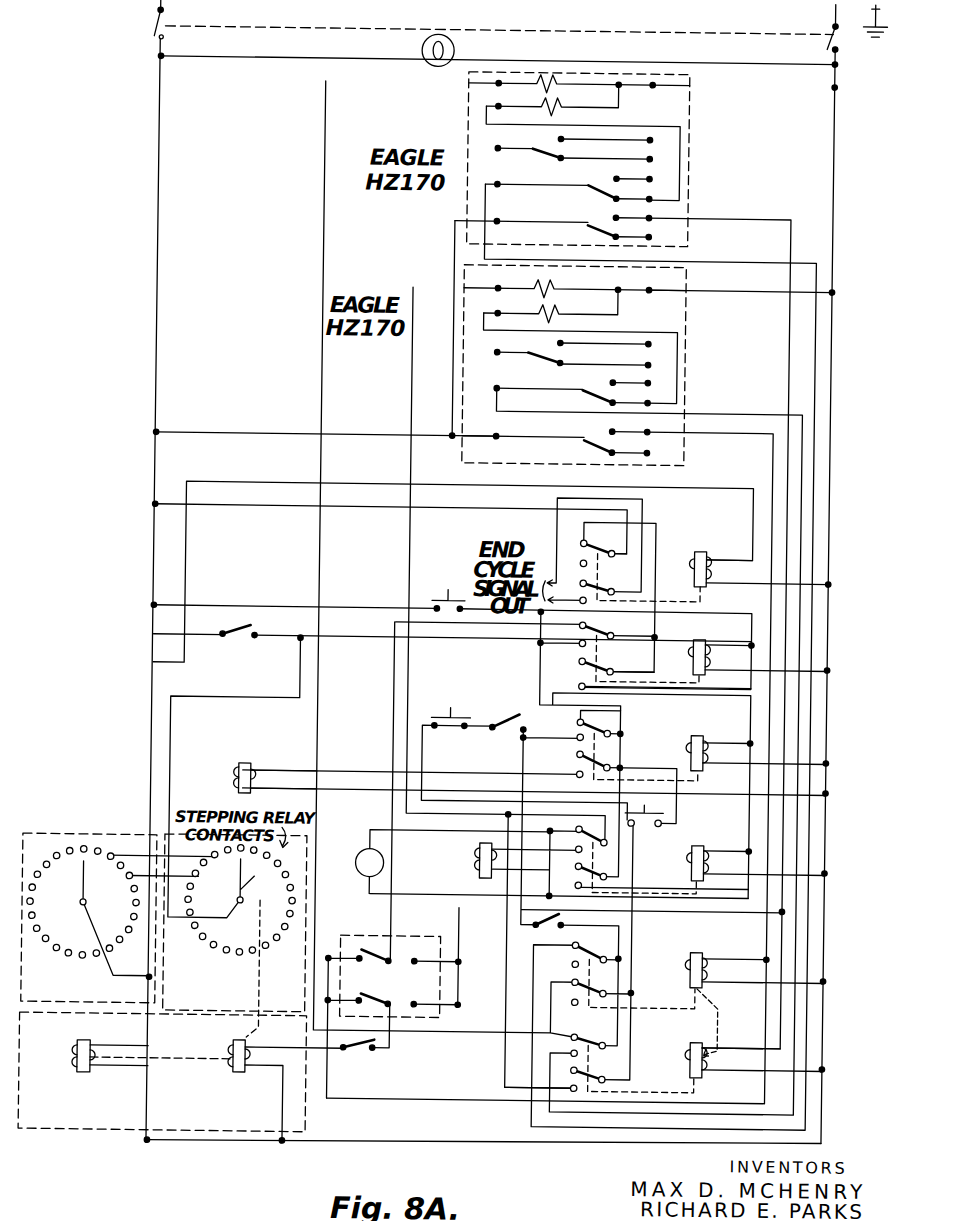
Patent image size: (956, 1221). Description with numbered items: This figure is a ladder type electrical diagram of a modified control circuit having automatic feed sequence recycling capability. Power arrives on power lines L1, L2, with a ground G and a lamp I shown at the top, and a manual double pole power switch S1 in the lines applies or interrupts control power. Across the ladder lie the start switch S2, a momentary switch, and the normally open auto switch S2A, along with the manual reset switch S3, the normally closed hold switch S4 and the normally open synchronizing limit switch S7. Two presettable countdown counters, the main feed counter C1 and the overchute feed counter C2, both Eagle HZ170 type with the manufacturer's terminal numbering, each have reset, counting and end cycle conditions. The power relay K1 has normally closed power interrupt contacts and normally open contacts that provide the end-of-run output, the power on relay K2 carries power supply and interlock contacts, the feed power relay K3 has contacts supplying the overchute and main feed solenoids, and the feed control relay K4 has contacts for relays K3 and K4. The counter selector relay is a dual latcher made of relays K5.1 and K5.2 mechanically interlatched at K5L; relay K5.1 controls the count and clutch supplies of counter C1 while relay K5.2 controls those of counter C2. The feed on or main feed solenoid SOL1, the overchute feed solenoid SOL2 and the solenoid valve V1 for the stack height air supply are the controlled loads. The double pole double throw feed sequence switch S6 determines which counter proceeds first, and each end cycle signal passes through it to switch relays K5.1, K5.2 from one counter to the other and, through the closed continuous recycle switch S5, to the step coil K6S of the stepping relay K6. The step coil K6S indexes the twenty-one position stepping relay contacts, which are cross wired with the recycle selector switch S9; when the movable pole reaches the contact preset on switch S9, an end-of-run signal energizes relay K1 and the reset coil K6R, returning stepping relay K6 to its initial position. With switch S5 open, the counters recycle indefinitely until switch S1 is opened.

The power line L1 is at (499, 19).
The power line L2 is at (804, 573).
The ground G is at (878, 21).
The indicator lamp I is at (415, 48).
The power switch S1 is at (100, 570).
The start switch S2 is at (419, 601).
The auto switch S2A is at (200, 668).
The reset switch S3 is at (666, 807).
The hold switch S4 is at (428, 746).
The continuous recycle switch S5 is at (358, 1068).
The feed sequence switch S6 is at (406, 1013).
The synchronizing switch S7 is at (517, 706).
The recycle selector switch S9 is at (54, 855).
The main feed counter C1 is at (610, 158).
The overchute feed counter C2 is at (614, 366).
The power relay K1 is at (645, 597).
The power on relay K2 is at (645, 654).
The feed power relay K3 is at (642, 745).
The feed control relay K4 is at (642, 858).
The counter selector relay K5.1 is at (620, 961).
The counter selector relay K5.2 is at (638, 1055).
The mechanical interlatch K5L is at (718, 1032).
The stepping relay K6 is at (61, 1146).
The reset coil K6R is at (146, 1091).
The step coil K6S is at (243, 1090).
The solenoid valve V1 is at (364, 852).
The main feed solenoid SOL1 is at (231, 770).
The overchute feed solenoid SOL2 is at (457, 862).